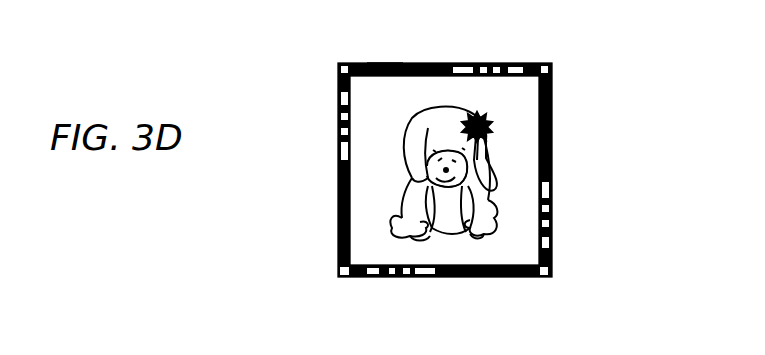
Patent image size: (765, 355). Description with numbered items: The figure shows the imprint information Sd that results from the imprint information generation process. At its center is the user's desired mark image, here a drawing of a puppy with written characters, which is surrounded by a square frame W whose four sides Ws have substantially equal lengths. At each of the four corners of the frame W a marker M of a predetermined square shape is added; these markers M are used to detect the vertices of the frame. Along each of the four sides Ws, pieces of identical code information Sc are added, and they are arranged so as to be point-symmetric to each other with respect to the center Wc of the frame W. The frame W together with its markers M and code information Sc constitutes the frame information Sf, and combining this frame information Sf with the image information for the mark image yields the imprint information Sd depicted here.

The frame information Sf is at (554, 96).
The imprint information Sd is at (460, 31).
The frame W is at (367, 63).
The sides of frame Ws is at (403, 63).
The center of frame Wc is at (445, 178).
The markers M is at (340, 64).
The code information Sc is at (489, 62).